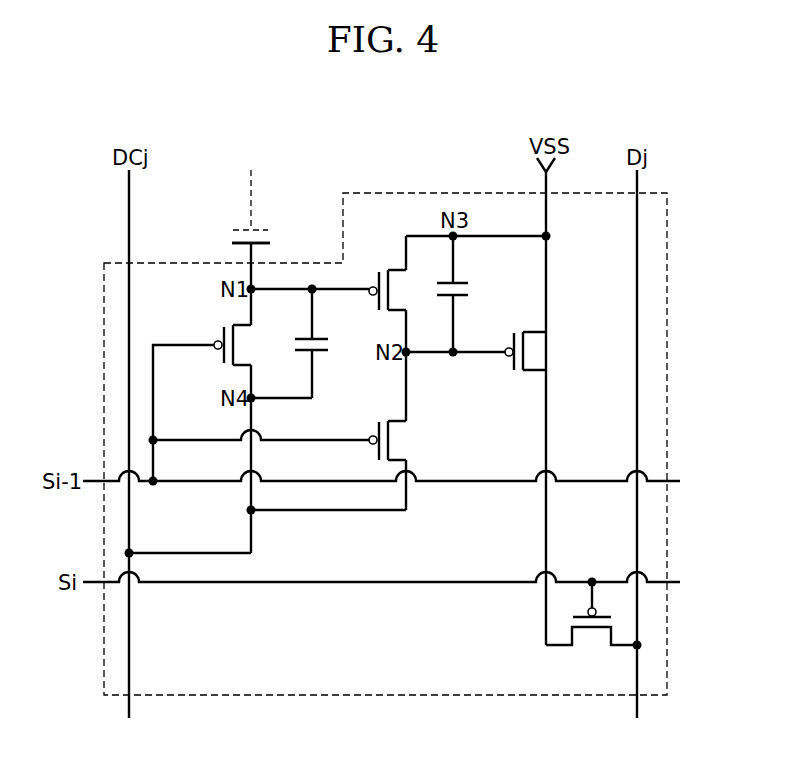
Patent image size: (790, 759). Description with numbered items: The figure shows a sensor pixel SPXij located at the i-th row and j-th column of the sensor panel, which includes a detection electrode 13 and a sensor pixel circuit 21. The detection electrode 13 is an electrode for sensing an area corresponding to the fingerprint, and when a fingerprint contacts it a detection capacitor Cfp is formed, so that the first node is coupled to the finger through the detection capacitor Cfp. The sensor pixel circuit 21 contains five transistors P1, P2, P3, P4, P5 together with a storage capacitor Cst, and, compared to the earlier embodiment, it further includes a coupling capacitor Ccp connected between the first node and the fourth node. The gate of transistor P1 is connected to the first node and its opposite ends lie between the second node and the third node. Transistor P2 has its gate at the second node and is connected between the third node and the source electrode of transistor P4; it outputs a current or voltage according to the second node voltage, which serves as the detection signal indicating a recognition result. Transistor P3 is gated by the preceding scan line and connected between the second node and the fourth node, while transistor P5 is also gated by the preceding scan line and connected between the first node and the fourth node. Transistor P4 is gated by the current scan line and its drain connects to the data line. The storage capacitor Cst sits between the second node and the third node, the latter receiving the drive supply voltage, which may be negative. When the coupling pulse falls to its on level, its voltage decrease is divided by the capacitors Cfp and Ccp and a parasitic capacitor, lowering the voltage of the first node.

The detection electrode 13 is at (272, 245).
The sensor pixel circuit 21 is at (386, 193).
The sensor pixel SPXij is at (672, 155).
The transistor P1 is at (400, 290).
The transistor P2 is at (538, 351).
The transistor P3 is at (402, 440).
The transistor P4 is at (591, 627).
The transistor P5 is at (246, 345).
The storage capacitor Cst is at (474, 294).
The coupling capacitor Ccp is at (334, 343).
The detection capacitor Cfp is at (235, 229).